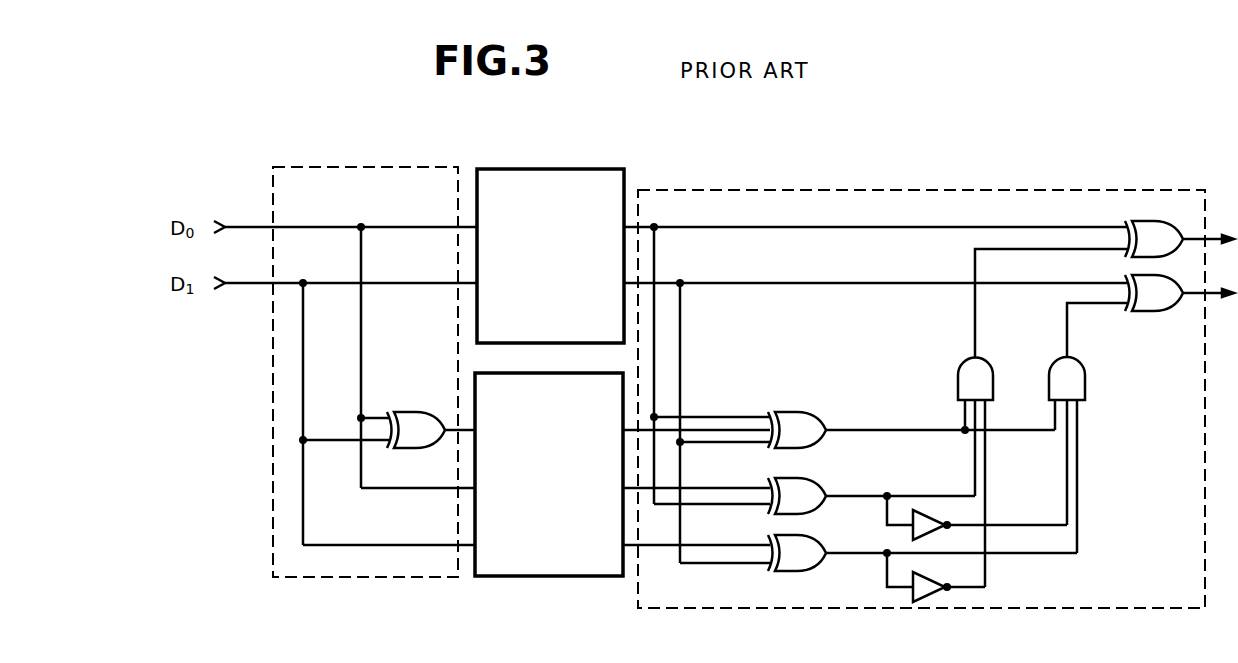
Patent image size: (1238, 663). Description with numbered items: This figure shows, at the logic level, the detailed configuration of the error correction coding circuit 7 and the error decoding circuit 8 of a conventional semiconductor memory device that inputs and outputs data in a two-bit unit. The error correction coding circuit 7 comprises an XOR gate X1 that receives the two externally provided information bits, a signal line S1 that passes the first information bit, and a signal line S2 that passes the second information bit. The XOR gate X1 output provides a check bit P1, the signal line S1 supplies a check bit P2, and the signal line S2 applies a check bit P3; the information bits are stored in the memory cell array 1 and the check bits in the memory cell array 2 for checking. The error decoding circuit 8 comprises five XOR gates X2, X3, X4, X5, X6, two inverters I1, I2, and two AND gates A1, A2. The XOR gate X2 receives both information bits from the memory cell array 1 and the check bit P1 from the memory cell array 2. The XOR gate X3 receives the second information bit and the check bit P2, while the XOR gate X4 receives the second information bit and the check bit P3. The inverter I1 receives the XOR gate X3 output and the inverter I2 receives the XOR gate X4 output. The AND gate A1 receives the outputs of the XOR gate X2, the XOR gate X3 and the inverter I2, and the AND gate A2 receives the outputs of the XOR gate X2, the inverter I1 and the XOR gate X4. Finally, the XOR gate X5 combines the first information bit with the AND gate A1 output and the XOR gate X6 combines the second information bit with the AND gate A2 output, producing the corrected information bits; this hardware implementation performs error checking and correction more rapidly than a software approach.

The memory cell array 1 is at (630, 170).
The memory cell array for checking 2 is at (600, 578).
The error correction coding circuit 7 is at (388, 578).
The error decoding circuit 8 is at (862, 609).
The XOR gate X1 is at (410, 414).
The XOR gate X2 is at (800, 414).
The XOR gate X3 is at (800, 480).
The XOR gate X4 is at (800, 537).
The XOR gate X5 is at (1140, 222).
The XOR gate X6 is at (1140, 312).
The AND gate A1 is at (958, 392).
The AND gate A2 is at (1049, 392).
The inverter I1 is at (928, 516).
The inverter I2 is at (928, 578).
The signal line S1 is at (407, 489).
The signal line S2 is at (355, 546).
The check bit P1 is at (492, 432).
The check bit P2 is at (492, 490).
The check bit P3 is at (492, 548).